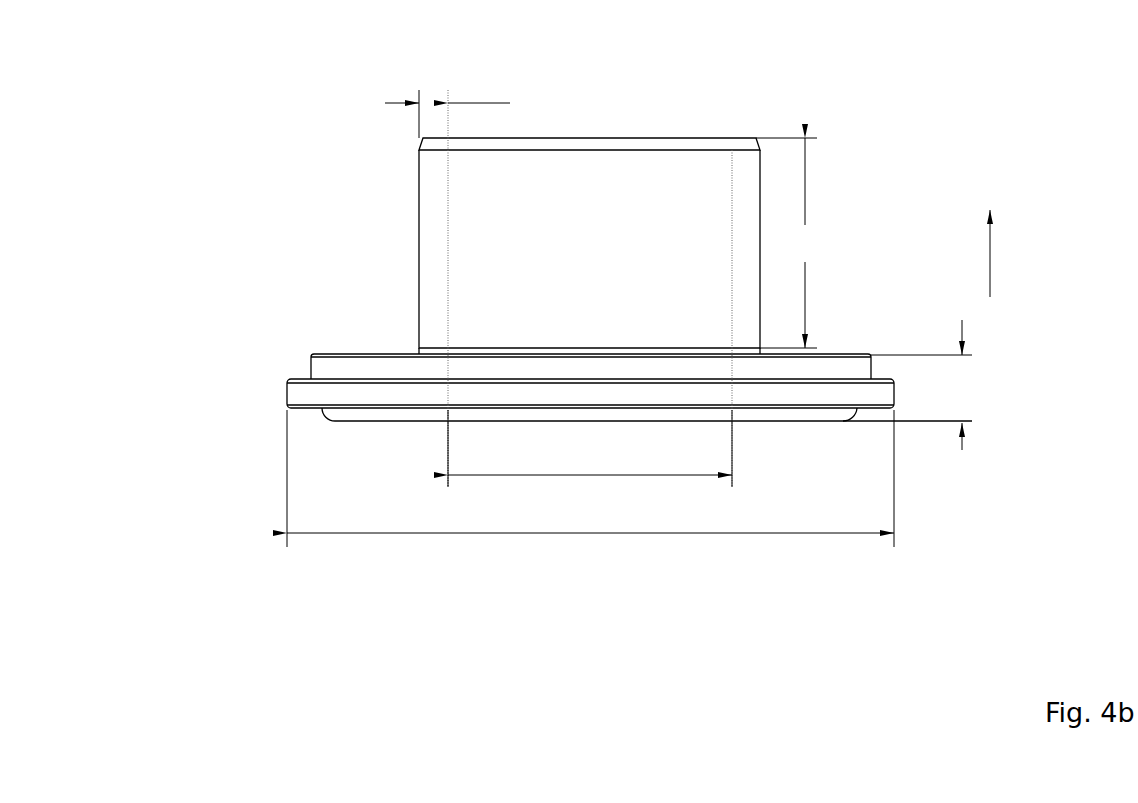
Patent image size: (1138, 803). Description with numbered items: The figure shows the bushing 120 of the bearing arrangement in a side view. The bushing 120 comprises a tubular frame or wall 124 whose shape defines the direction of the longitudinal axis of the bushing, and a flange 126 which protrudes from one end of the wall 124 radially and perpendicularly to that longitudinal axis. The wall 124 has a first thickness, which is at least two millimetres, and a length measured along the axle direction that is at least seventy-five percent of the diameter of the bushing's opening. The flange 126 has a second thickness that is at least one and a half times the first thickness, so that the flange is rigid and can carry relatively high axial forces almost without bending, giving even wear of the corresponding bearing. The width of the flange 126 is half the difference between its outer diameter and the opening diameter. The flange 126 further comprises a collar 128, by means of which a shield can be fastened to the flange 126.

The bushing 120 is at (622, 281).
The wall of the bushing 124 is at (608, 256).
The flange 126 is at (348, 338).
The collar 128 is at (313, 393).